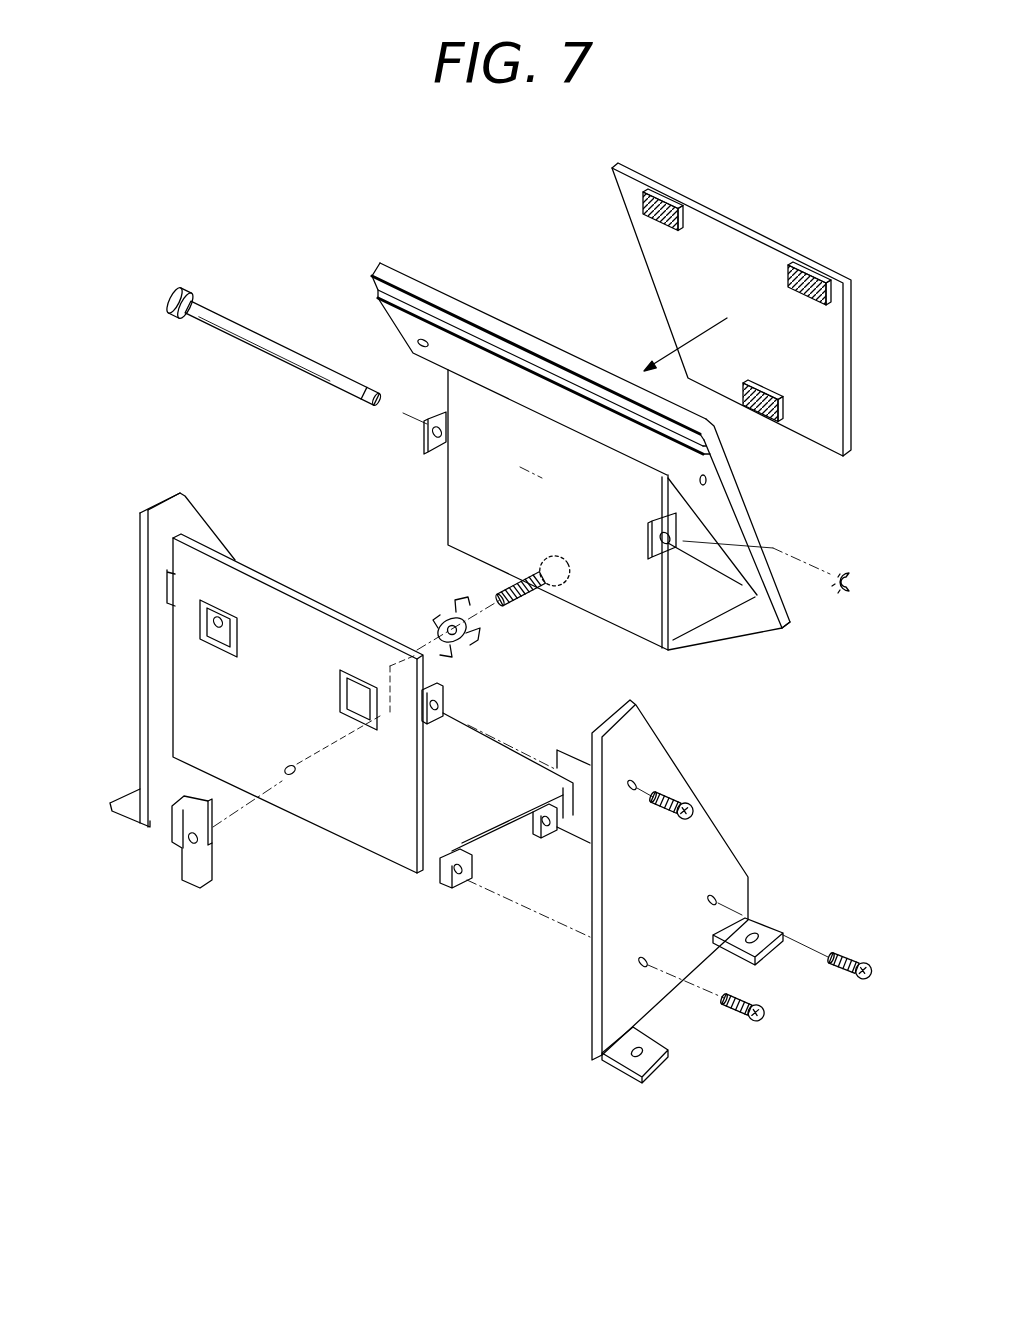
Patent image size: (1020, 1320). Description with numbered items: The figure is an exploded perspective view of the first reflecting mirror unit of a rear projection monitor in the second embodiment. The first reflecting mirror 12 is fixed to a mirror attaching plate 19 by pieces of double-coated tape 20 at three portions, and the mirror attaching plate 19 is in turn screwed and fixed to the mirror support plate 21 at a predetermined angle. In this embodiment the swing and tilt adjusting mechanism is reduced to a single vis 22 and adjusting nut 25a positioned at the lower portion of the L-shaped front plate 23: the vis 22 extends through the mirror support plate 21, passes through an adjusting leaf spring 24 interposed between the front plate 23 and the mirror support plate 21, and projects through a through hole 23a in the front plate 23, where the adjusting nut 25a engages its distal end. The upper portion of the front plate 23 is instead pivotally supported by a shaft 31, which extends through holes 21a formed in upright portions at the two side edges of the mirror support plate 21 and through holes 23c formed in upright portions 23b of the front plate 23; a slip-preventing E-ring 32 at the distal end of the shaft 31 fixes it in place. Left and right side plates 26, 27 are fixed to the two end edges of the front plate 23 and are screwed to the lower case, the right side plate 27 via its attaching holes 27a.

The first reflecting mirror 12 is at (817, 263).
The double-coated tape 20 is at (680, 204).
The shaft 31 is at (247, 328).
The mirror support plate 21 is at (700, 624).
The holes 21a is at (427, 437).
The slip-preventing E-ring 32 is at (852, 566).
The mirror attaching plate 19 is at (790, 622).
The vis 22 is at (530, 597).
The adjusting leaf spring 24 is at (435, 615).
The L-shaped front plate 23 is at (377, 838).
The through hole 23a is at (290, 778).
The upright portions 23b is at (340, 697).
The holes 23c is at (207, 623).
The left side plate 26 is at (150, 713).
The adjusting nut 25a is at (207, 868).
The right side plate 27 is at (607, 975).
The attaching holes 27a is at (760, 947).